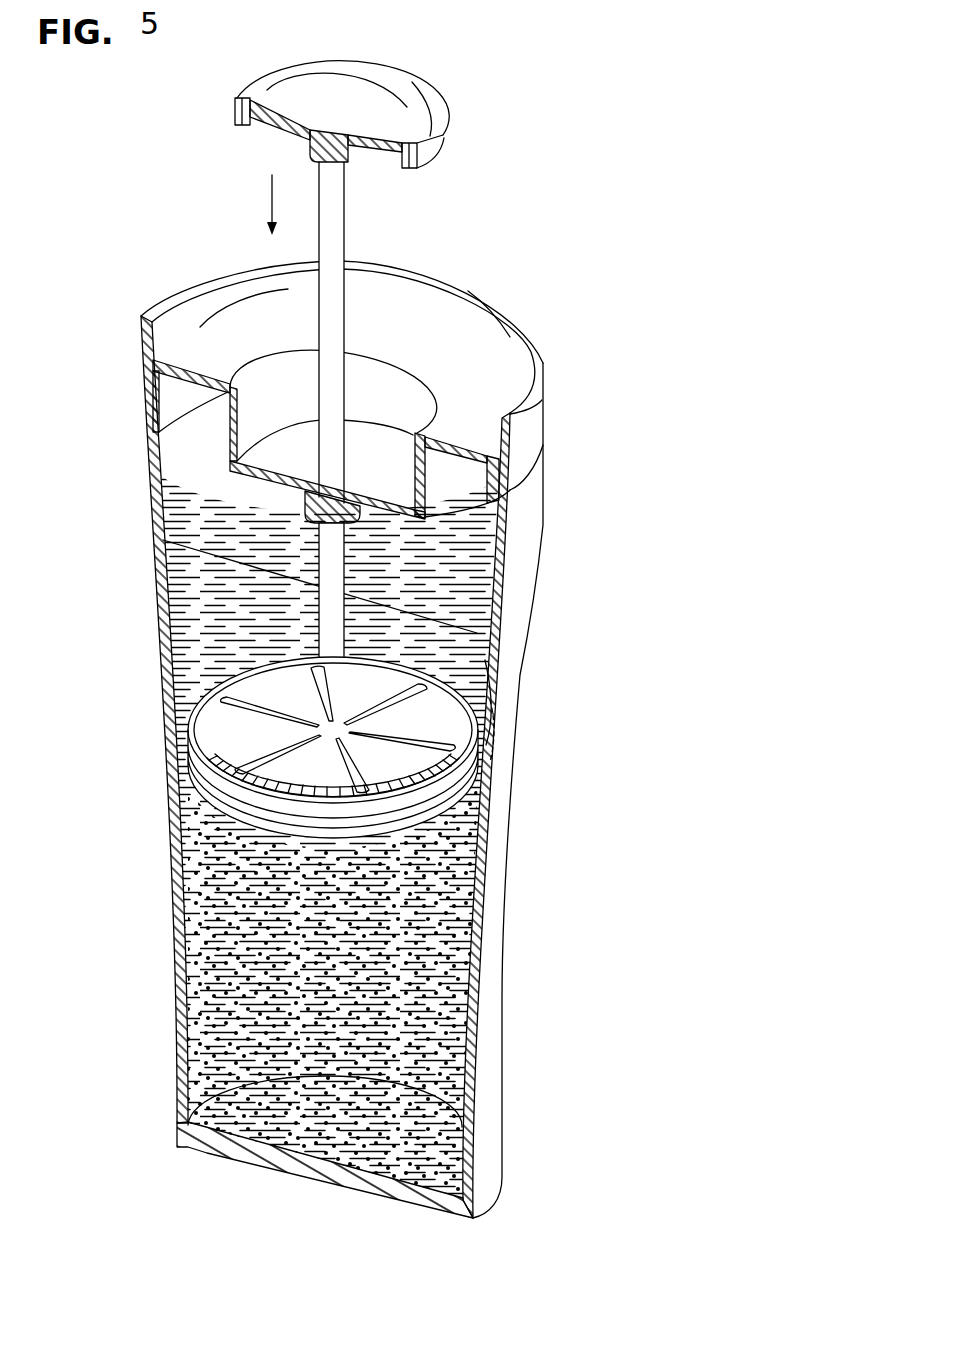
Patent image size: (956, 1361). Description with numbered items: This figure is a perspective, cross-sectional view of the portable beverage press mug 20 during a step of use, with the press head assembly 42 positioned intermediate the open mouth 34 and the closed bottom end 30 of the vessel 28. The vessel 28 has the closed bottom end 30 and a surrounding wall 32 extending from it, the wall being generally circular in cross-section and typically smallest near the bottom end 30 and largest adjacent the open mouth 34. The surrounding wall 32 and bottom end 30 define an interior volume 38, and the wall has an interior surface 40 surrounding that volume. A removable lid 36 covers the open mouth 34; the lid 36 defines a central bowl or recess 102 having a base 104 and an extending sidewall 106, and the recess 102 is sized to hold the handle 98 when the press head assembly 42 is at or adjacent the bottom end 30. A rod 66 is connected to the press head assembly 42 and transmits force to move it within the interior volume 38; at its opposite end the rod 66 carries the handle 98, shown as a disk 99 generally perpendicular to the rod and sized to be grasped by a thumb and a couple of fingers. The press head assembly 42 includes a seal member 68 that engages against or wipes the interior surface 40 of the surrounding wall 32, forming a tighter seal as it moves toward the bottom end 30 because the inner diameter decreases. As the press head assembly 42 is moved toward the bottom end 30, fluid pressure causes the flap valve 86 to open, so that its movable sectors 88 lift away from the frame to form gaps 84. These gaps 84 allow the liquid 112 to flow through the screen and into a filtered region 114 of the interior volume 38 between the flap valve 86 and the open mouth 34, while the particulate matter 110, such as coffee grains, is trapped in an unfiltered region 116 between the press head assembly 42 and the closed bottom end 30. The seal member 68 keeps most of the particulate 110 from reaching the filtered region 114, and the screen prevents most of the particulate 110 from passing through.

The portable beverage press mug 20 is at (635, 230).
The vessel 28 is at (156, 600).
The closed bottom end 30 is at (333, 1183).
The surrounding wall 32 is at (162, 668).
The open mouth 34 is at (530, 354).
The lid 36 is at (186, 308).
The interior volume 38 is at (476, 676).
The interior surface 40 is at (338, 761).
The press head assembly 42 is at (243, 650).
The rod 66 is at (340, 230).
The seal member 68 is at (468, 775).
The gap 84 is at (215, 775).
The flap valve 86 is at (210, 730).
The sectors 88 is at (450, 720).
The handle 98 is at (371, 93).
The disk 99 is at (268, 78).
The recess 102 is at (331, 421).
The base 104 is at (240, 478).
The sidewall 106 is at (228, 424).
The particulate matter 110 is at (450, 985).
The liquid 112 is at (465, 635).
The filtered region 114 is at (183, 578).
The unfiltered region 116 is at (450, 1035).